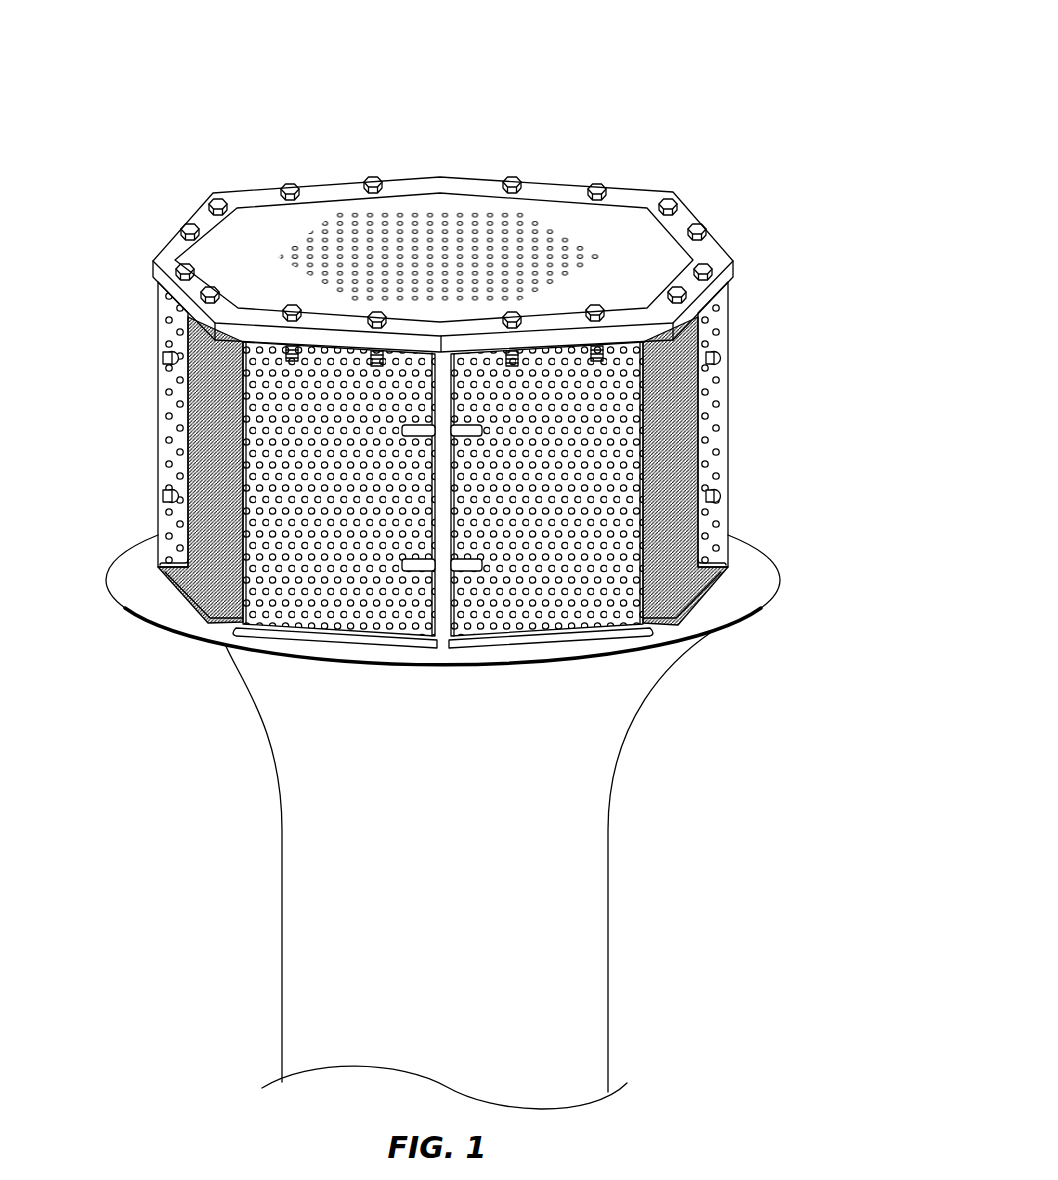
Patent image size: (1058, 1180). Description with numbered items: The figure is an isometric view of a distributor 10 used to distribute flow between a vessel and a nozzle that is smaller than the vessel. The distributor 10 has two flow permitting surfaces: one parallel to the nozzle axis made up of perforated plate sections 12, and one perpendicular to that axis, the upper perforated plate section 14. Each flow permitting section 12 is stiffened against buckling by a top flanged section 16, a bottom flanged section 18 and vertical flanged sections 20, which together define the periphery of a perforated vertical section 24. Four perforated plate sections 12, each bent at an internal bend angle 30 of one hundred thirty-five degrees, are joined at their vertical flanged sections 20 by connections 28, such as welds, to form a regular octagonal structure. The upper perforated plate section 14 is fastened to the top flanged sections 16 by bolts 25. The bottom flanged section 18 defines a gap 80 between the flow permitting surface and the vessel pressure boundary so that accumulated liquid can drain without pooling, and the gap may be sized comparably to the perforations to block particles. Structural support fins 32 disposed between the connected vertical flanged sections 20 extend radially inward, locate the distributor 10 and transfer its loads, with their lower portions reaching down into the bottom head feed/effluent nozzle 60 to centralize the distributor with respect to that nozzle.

The distributor 10 is at (597, 56).
The flow permitting section 12 is at (246, 186).
The upper perforated plate section 14 is at (433, 215).
The top flanged section 16 is at (153, 272).
The bottom flanged section 18 is at (160, 585).
The vertical flanged section 20 is at (165, 312).
The vertical section 24 is at (263, 365).
The bolt 25 is at (515, 182).
The connection 28 is at (165, 356).
The internal bend angle 30 is at (235, 543).
The structural support fin 32 is at (442, 412).
The bottom head feed/effluent nozzle 60 is at (247, 695).
The gap 80 is at (575, 650).